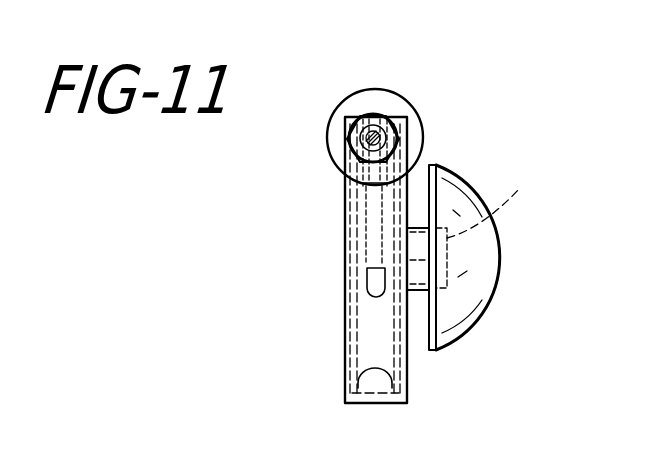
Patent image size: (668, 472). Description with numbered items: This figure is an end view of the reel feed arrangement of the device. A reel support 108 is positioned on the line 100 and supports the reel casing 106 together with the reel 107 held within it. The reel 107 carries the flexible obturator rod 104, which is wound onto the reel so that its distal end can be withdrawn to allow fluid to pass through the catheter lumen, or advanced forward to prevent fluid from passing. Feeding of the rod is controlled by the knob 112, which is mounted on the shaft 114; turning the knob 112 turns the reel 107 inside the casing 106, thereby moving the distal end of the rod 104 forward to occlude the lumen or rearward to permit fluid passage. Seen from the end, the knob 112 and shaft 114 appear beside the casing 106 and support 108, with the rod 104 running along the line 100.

The line 100 is at (371, 118).
The flexible obturator rod 104 is at (419, 128).
The reel casing 106 is at (345, 266).
The reel 107 is at (357, 378).
The reel support 108 is at (410, 108).
The knob 112 is at (500, 258).
The shaft 114 is at (500, 196).